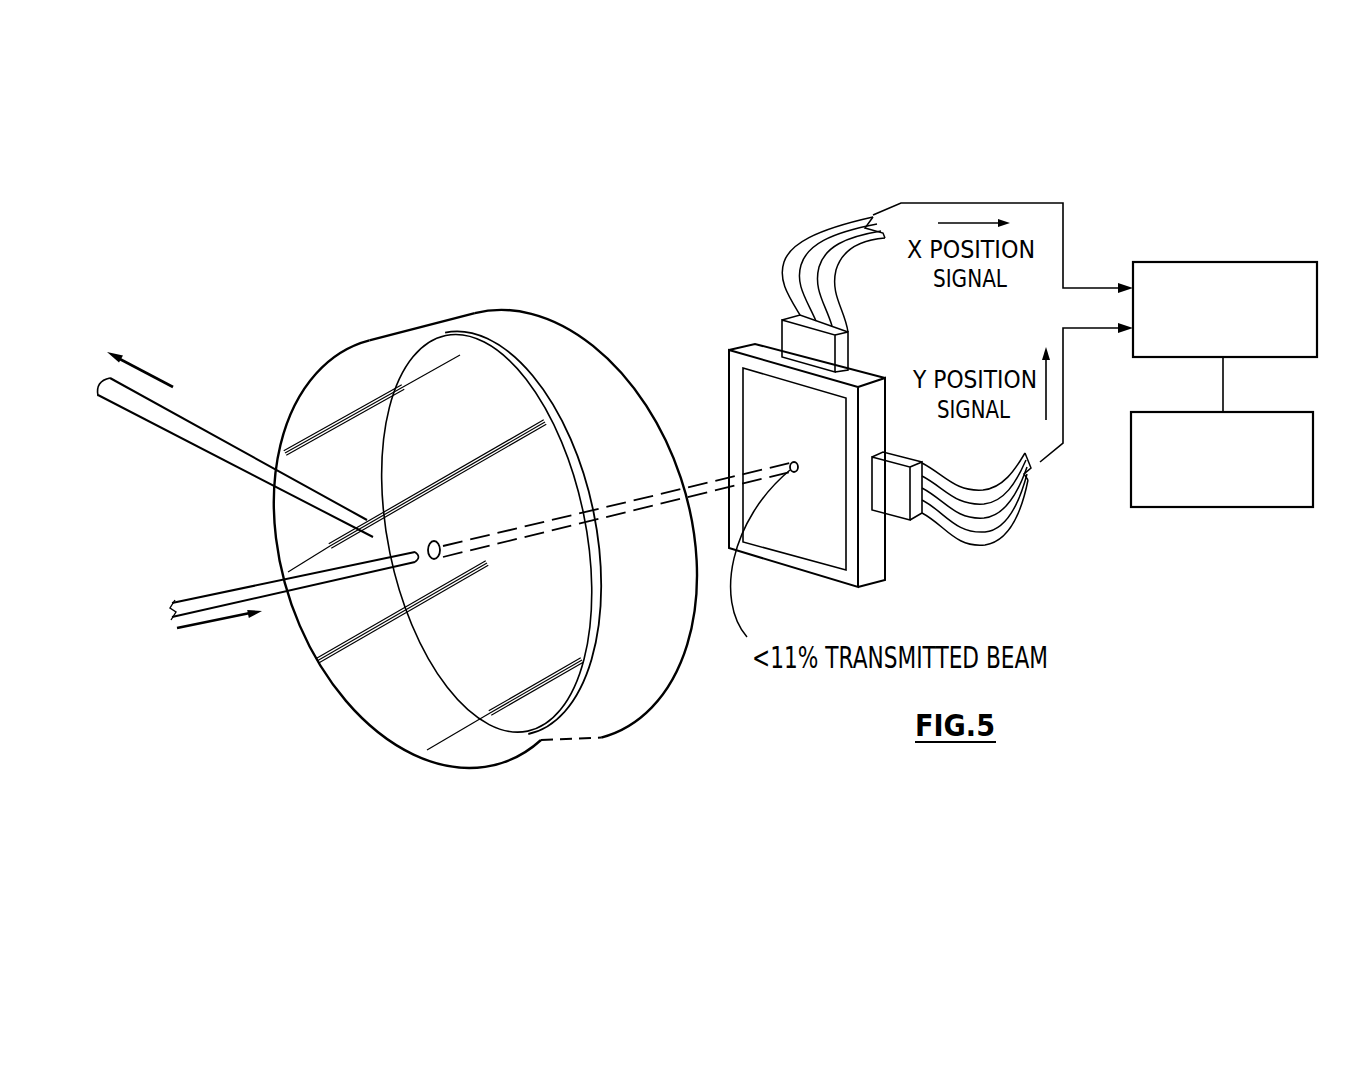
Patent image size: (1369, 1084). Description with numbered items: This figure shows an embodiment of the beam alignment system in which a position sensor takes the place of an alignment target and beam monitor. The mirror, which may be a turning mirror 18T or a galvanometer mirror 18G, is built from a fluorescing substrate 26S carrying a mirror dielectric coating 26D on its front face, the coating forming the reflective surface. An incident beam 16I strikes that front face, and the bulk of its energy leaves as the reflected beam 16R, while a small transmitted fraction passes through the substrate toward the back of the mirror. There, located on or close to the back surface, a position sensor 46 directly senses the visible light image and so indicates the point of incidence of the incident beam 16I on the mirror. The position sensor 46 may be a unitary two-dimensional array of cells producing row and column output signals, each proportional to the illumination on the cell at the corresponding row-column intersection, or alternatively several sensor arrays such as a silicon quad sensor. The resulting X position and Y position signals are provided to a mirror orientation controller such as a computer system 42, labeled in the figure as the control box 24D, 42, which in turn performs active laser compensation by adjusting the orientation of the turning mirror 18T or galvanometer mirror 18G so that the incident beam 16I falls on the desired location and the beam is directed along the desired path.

The turning mirror 18T is at (461, 496).
The galvanometer mirror 18G is at (461, 496).
The fluorescing substrate 26S is at (445, 322).
The mirror dielectric coating 26D is at (303, 418).
The reflected beam 16R is at (155, 411).
The incident beam 16I is at (232, 590).
The position sensor 46 is at (887, 547).
The control box / controller 24D is at (1241, 363).
The computer system 42 is at (1260, 262).